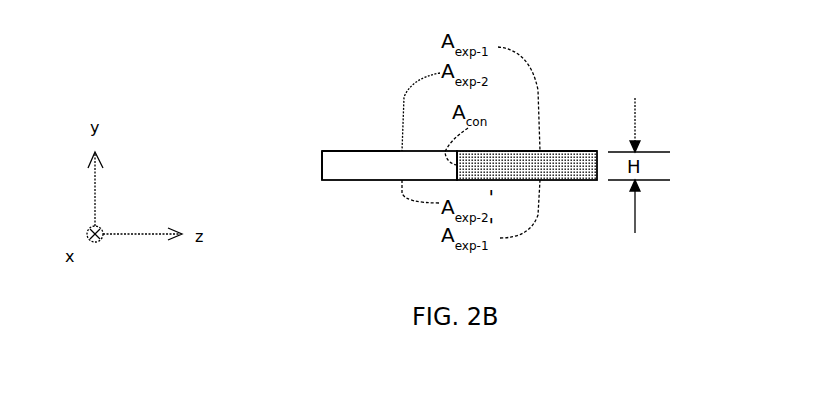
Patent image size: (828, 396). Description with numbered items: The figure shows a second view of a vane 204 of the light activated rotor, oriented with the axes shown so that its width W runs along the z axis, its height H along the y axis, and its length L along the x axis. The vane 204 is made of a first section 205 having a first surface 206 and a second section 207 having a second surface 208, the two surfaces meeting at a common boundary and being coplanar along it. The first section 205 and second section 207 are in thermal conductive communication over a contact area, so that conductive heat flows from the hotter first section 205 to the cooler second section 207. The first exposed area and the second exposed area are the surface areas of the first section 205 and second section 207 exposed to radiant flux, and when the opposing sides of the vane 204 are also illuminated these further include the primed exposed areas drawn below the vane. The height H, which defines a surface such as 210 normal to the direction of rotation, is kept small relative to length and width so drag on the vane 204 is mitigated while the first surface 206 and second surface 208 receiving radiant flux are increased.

The vane 204 is at (420, 137).
The first section 205 is at (547, 151).
The first surface 206 is at (575, 151).
The second section 207 is at (377, 162).
The second surface 208 is at (343, 151).
The surface 210 is at (322, 165).